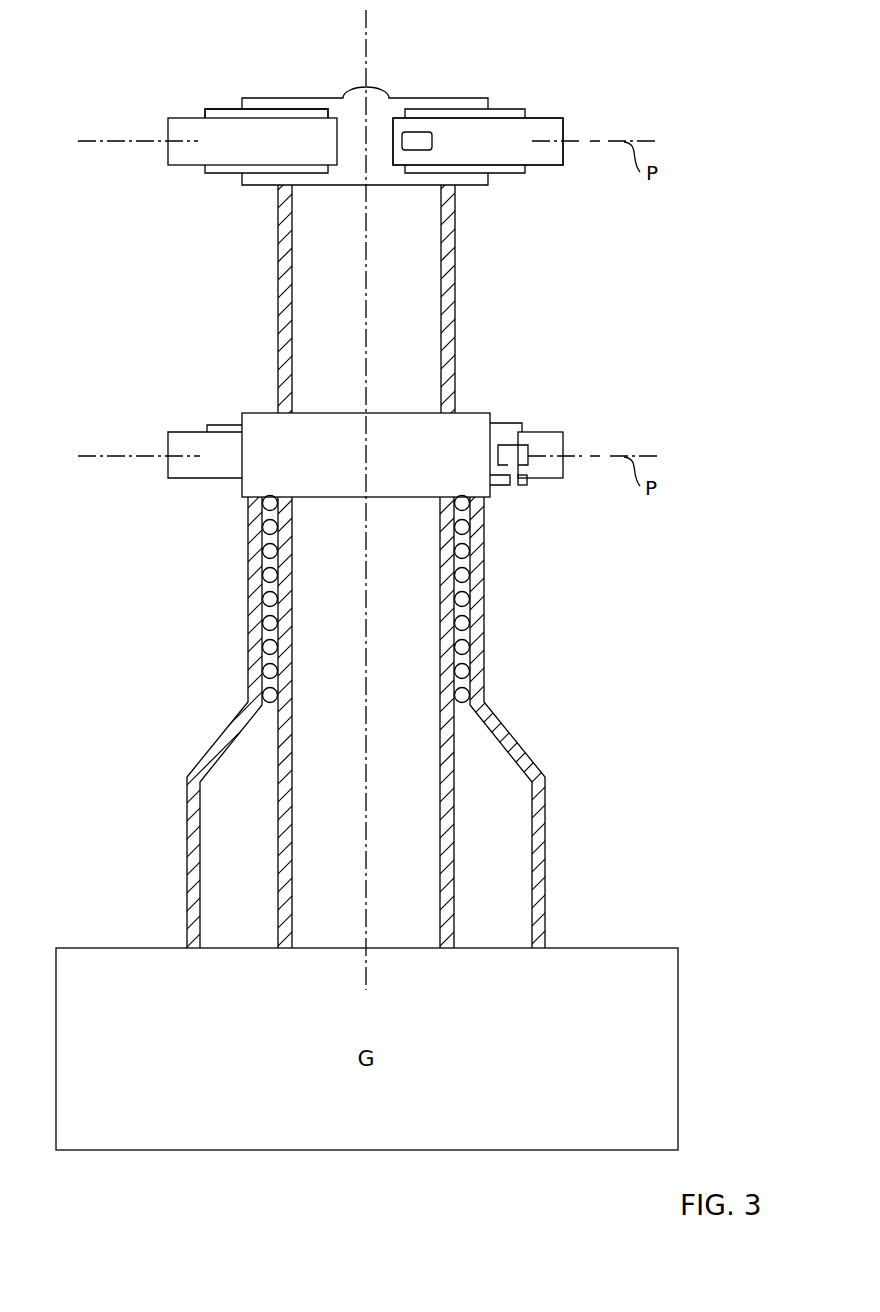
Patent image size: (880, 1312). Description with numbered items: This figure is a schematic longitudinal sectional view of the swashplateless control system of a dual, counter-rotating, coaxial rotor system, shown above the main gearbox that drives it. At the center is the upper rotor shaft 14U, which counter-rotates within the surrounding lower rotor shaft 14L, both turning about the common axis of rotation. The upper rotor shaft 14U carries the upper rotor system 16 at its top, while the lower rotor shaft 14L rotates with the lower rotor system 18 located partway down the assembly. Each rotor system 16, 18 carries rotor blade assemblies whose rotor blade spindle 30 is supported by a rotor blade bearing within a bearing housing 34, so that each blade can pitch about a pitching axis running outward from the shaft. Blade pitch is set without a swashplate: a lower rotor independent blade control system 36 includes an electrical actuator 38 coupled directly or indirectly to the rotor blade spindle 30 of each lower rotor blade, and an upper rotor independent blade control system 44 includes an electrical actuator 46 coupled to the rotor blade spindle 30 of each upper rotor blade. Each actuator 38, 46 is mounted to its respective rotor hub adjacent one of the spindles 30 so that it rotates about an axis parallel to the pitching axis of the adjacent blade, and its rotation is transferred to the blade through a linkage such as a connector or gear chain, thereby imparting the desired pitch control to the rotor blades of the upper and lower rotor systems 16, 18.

The upper rotor shaft 14U is at (455, 263).
The lower rotor shaft 14L is at (548, 792).
The upper rotor system 16 is at (585, 93).
The lower rotor system 18 is at (648, 436).
The rotor blade spindle 30 is at (500, 132).
The bearing housing 34 is at (275, 112).
The lower rotor independent blade control system 36 is at (568, 523).
The electrical actuator 38 is at (522, 450).
The upper rotor independent blade control system 44 is at (188, 94).
The electrical actuator 46 is at (420, 132).